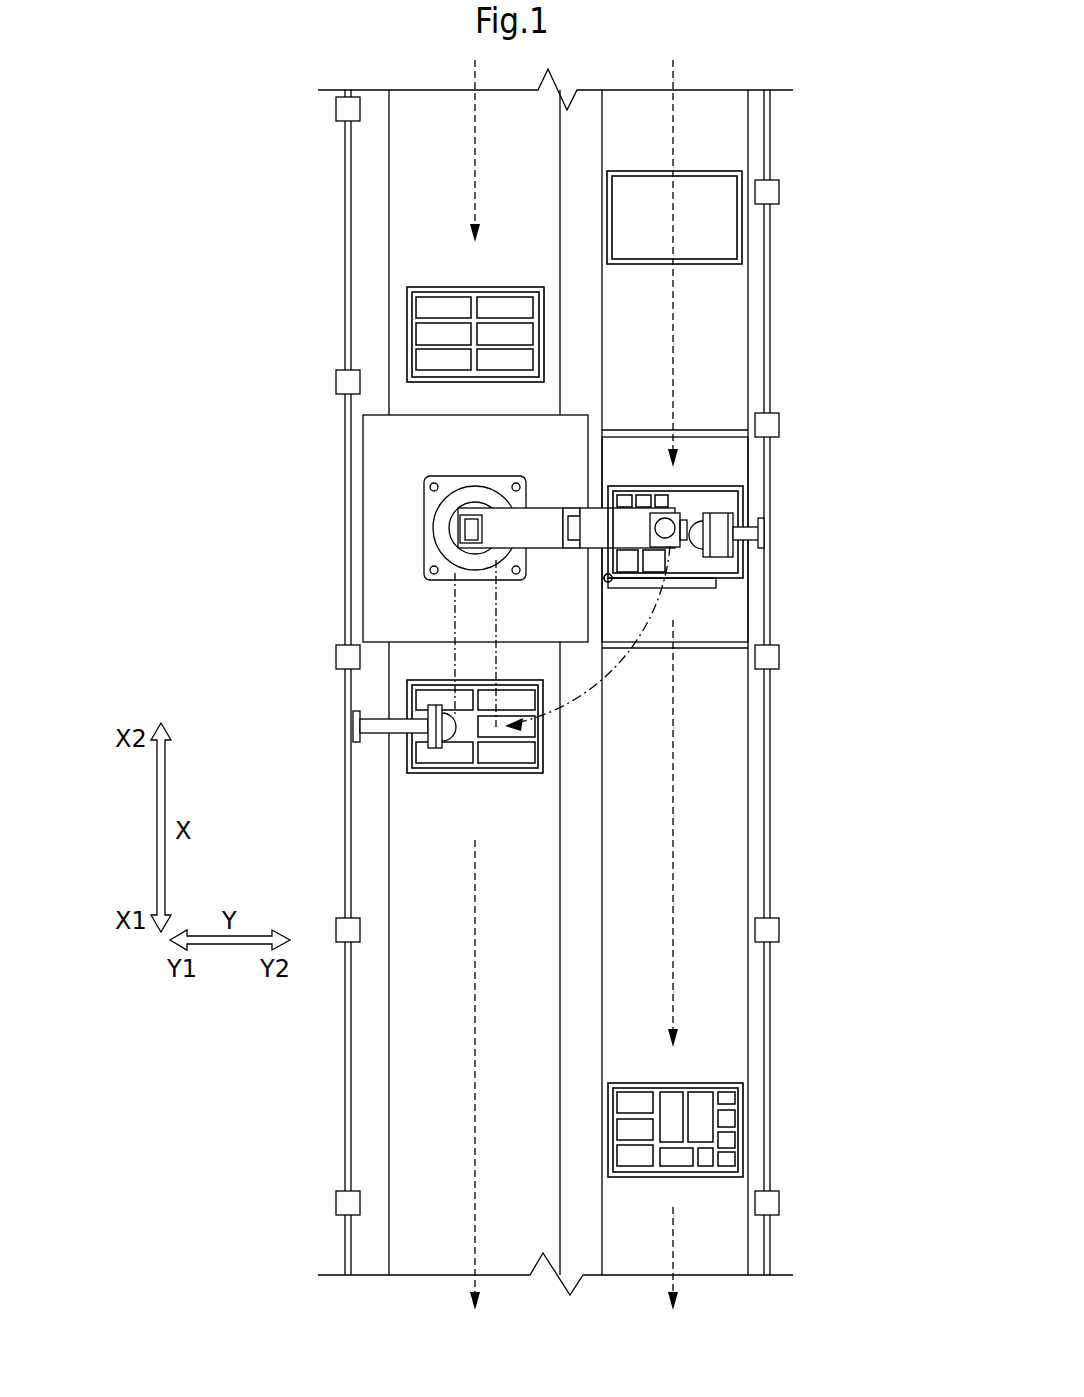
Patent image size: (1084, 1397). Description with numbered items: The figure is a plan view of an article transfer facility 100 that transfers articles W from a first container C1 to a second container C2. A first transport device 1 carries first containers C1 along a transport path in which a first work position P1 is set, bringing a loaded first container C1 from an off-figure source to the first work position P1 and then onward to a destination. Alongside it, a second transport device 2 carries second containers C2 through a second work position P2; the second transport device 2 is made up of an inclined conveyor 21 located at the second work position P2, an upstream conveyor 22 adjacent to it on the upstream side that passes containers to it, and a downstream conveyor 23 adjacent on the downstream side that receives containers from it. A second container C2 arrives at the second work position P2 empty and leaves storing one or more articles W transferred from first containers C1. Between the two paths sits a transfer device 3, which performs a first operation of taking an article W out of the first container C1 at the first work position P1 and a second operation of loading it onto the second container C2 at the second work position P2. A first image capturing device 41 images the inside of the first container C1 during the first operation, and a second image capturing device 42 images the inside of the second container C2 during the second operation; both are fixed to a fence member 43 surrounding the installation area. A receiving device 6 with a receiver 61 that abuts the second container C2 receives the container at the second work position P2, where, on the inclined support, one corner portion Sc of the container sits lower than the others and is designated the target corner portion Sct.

The article transfer facility 100 is at (288, 133).
The first transport device 1 is at (380, 1008).
The second transport device 2 is at (745, 685).
The inclined conveyor 21 is at (710, 457).
The upstream conveyor 22 is at (710, 368).
The downstream conveyor 23 is at (710, 718).
The transfer device 3 is at (558, 507).
The first image capturing device 41 is at (417, 713).
The second image capturing device 42 is at (735, 553).
The fence member 43 is at (770, 132).
The receiving device 6 is at (730, 596).
The receiver 61 is at (713, 587).
The corner portion Sc is at (559, 607).
The target corner portion Sct is at (606, 583).
The first container C1 is at (408, 310).
The second container C2 is at (687, 170).
The article W is at (503, 307).
The first work position P1 is at (553, 762).
The second work position P2 is at (755, 512).